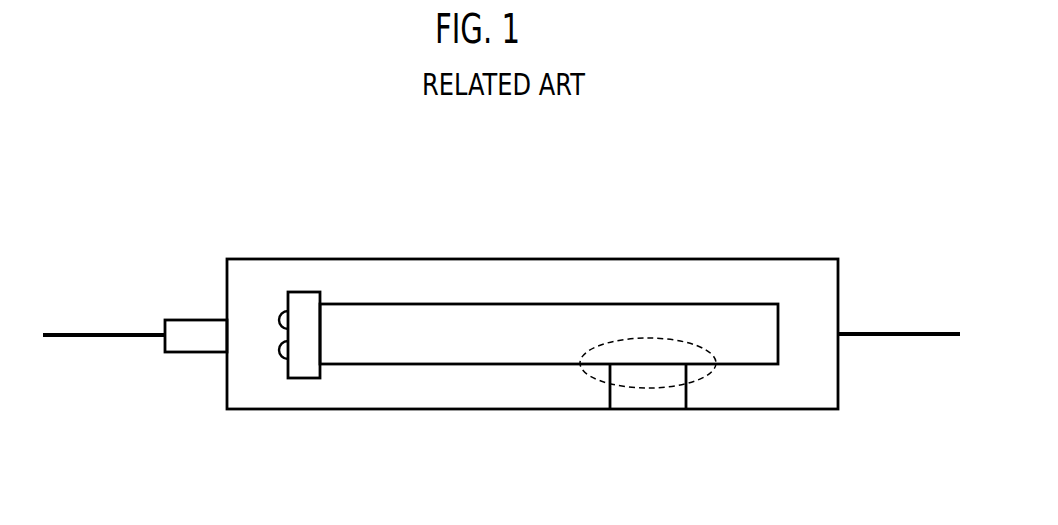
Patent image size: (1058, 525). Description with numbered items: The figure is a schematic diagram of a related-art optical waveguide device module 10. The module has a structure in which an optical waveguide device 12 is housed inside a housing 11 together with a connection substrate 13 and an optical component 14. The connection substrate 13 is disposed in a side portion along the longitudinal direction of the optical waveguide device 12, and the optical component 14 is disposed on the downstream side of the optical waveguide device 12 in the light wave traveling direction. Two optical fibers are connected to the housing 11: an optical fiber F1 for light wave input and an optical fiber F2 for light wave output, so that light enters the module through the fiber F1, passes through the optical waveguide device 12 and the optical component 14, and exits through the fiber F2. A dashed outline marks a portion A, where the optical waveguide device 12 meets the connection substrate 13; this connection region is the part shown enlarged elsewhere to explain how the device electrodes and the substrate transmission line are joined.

The optical waveguide device module 10 is at (788, 238).
The housing 11 is at (442, 409).
The optical waveguide device 12 is at (724, 323).
The connection substrate 13 is at (665, 398).
The optical component 14 is at (305, 305).
The portion A is at (593, 385).
The optical fiber for light wave input F1 is at (902, 337).
The optical fiber for light wave output F2 is at (102, 338).